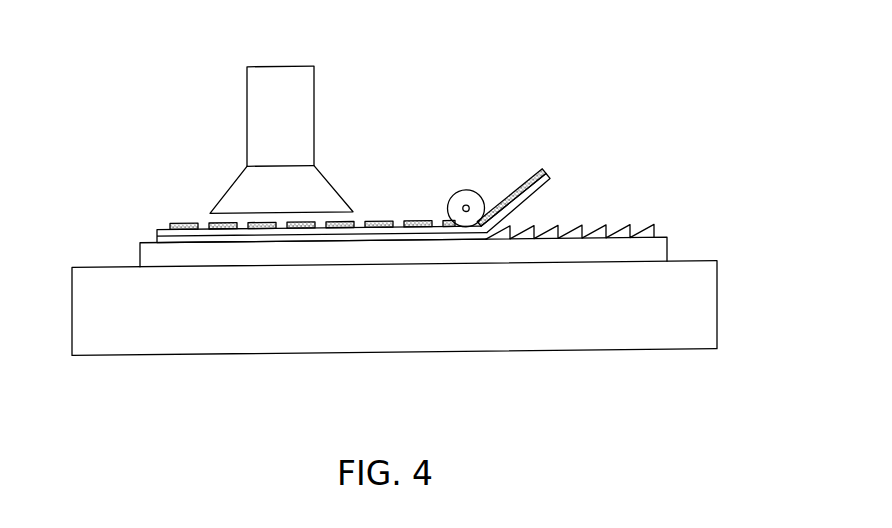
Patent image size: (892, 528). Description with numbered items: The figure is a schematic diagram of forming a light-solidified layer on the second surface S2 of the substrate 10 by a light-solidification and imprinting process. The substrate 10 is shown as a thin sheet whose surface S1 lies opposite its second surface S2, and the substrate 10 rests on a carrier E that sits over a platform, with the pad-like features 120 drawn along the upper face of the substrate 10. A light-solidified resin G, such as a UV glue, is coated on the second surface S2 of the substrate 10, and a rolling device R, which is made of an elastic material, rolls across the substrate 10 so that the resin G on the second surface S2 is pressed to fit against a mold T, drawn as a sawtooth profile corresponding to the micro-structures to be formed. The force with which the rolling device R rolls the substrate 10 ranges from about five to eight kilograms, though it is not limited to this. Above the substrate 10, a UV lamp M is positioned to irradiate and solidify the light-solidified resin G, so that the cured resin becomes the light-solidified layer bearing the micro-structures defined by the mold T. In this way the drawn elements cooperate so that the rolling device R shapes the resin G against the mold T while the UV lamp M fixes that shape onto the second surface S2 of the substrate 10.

The UV lamp M is at (262, 66).
The substrate 10 is at (160, 229).
The conductive pads 120 is at (189, 223).
The rolling device R is at (463, 191).
The first sheet S1 is at (546, 172).
The second surface S2 is at (552, 183).
The light-solidified resin G is at (525, 218).
The mold T is at (653, 226).
The carrier platform E is at (717, 284).